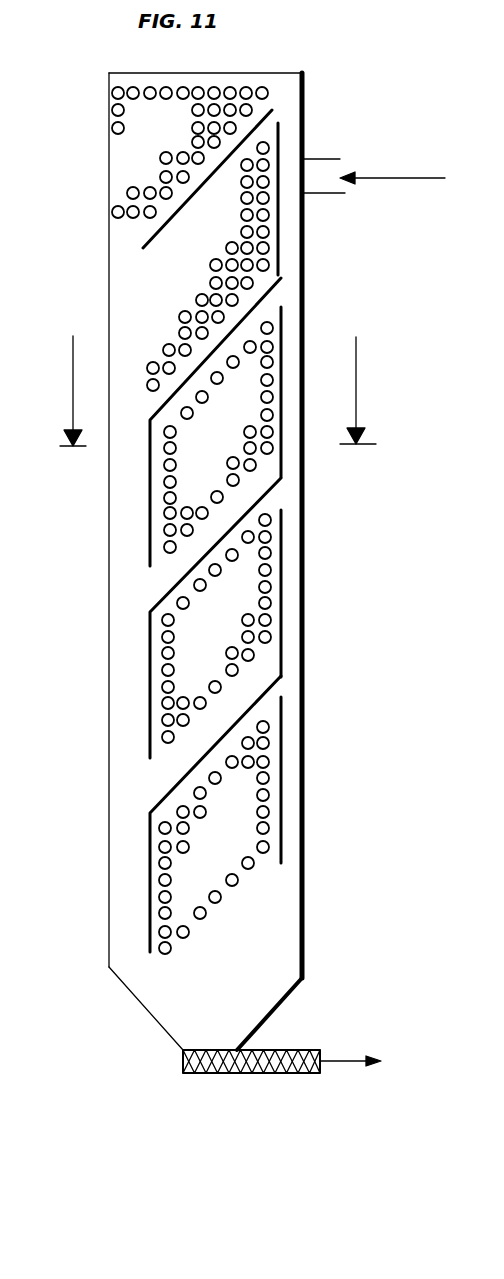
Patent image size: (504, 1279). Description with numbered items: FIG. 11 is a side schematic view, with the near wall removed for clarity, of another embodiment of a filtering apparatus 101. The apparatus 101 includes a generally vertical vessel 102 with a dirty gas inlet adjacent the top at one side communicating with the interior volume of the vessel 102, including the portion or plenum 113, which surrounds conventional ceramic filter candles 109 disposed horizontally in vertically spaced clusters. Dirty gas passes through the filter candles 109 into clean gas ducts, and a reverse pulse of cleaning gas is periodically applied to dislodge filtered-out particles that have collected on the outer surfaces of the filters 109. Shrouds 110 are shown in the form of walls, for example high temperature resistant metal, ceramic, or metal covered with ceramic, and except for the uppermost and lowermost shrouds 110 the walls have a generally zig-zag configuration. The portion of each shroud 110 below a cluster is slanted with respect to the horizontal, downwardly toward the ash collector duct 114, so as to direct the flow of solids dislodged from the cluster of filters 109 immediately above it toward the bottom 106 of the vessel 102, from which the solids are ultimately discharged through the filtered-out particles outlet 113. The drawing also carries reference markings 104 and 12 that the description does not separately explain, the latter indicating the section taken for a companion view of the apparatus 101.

The filtering apparatus 101 is at (90, 582).
The vessel 102 is at (294, 533).
The inlet 104 is at (332, 159).
The bottom 106 is at (109, 962).
The filter candles 109 is at (110, 112).
The shrouds 110 is at (170, 593).
The filtered-out particles outlet 113 is at (291, 303).
The ash collector duct 114 is at (120, 282).
The section line 12 is at (218, 378).